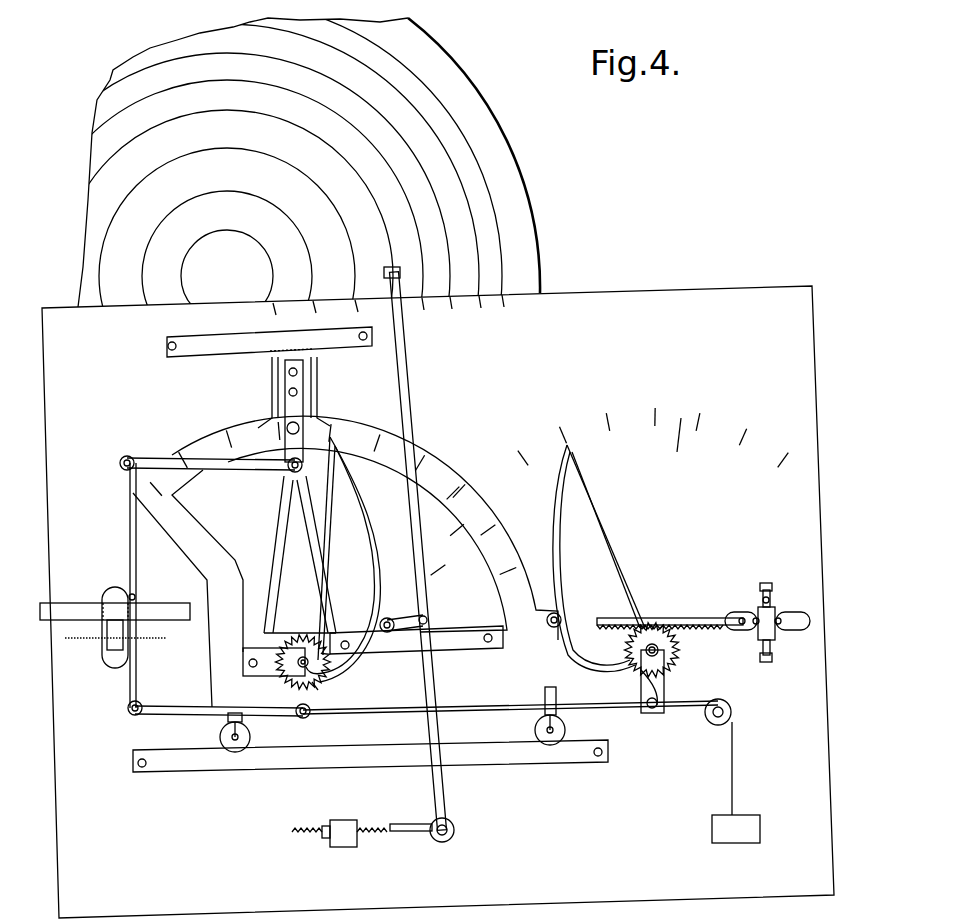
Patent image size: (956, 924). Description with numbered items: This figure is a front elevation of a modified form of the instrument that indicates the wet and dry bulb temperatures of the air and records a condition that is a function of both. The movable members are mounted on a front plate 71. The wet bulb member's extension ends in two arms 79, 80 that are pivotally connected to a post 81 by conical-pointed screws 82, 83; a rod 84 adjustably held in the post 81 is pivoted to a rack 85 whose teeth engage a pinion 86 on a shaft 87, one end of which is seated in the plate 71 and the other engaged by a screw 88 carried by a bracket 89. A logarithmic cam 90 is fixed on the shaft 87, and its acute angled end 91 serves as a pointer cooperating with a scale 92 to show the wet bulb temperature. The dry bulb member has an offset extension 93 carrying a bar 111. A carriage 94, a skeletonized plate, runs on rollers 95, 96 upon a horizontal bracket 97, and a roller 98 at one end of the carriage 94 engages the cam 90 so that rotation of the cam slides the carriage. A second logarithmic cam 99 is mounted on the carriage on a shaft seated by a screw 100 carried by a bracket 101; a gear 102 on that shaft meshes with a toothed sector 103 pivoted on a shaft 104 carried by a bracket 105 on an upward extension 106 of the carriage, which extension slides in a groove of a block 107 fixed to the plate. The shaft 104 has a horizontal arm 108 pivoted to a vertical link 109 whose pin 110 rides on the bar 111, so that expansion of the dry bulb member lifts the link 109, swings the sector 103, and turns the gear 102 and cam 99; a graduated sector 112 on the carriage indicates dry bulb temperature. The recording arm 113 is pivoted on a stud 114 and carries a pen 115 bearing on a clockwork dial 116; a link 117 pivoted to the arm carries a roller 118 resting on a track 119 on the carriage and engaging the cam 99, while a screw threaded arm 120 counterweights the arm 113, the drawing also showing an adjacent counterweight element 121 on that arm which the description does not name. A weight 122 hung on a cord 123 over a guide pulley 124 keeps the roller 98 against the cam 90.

The front plate 71 is at (788, 853).
The arm 79 is at (775, 600).
The arm 80 is at (778, 640).
The post 81 is at (778, 614).
The screw 82 is at (766, 584).
The screw 83 is at (772, 658).
The rod 84 is at (758, 610).
The rack 85 is at (695, 622).
The pinion 86 is at (652, 633).
The shaft 87 is at (663, 650).
The screw 88 is at (665, 670).
The bracket 89 is at (645, 683).
The logarithmic cam 90 is at (568, 582).
The acute angled end 91 is at (575, 452).
The scale 92 is at (656, 441).
The extension 93 is at (102, 628).
The carriage 94 is at (520, 708).
The roller 95 is at (565, 732).
The roller 96 is at (226, 737).
The bracket 97 is at (545, 768).
The roller 98 is at (553, 627).
The logarithmic cam 99 is at (375, 562).
The screw 100 is at (318, 694).
The bracket 101 is at (277, 666).
The gear 102 is at (325, 683).
The sector 103 is at (272, 636).
The shaft 104 is at (290, 475).
The bracket 105 is at (303, 416).
The upward extension 106 is at (312, 380).
The block 107 is at (237, 350).
The arm 108 is at (251, 468).
The link 109 is at (128, 524).
The pin 110 is at (132, 598).
The bar 111 is at (168, 612).
The sector 112 is at (440, 468).
The arm 113 is at (445, 648).
The pivot 114 is at (455, 830).
The pen 115 is at (397, 268).
The dial 116 is at (520, 210).
The link 117 is at (393, 620).
The roller 118 is at (385, 618).
The track 119 is at (412, 648).
The screw threaded arm 120 is at (398, 826).
The dashpot 121 is at (340, 820).
The weight 122 is at (745, 820).
The cord 123 is at (738, 745).
The guide pulley 124 is at (731, 708).